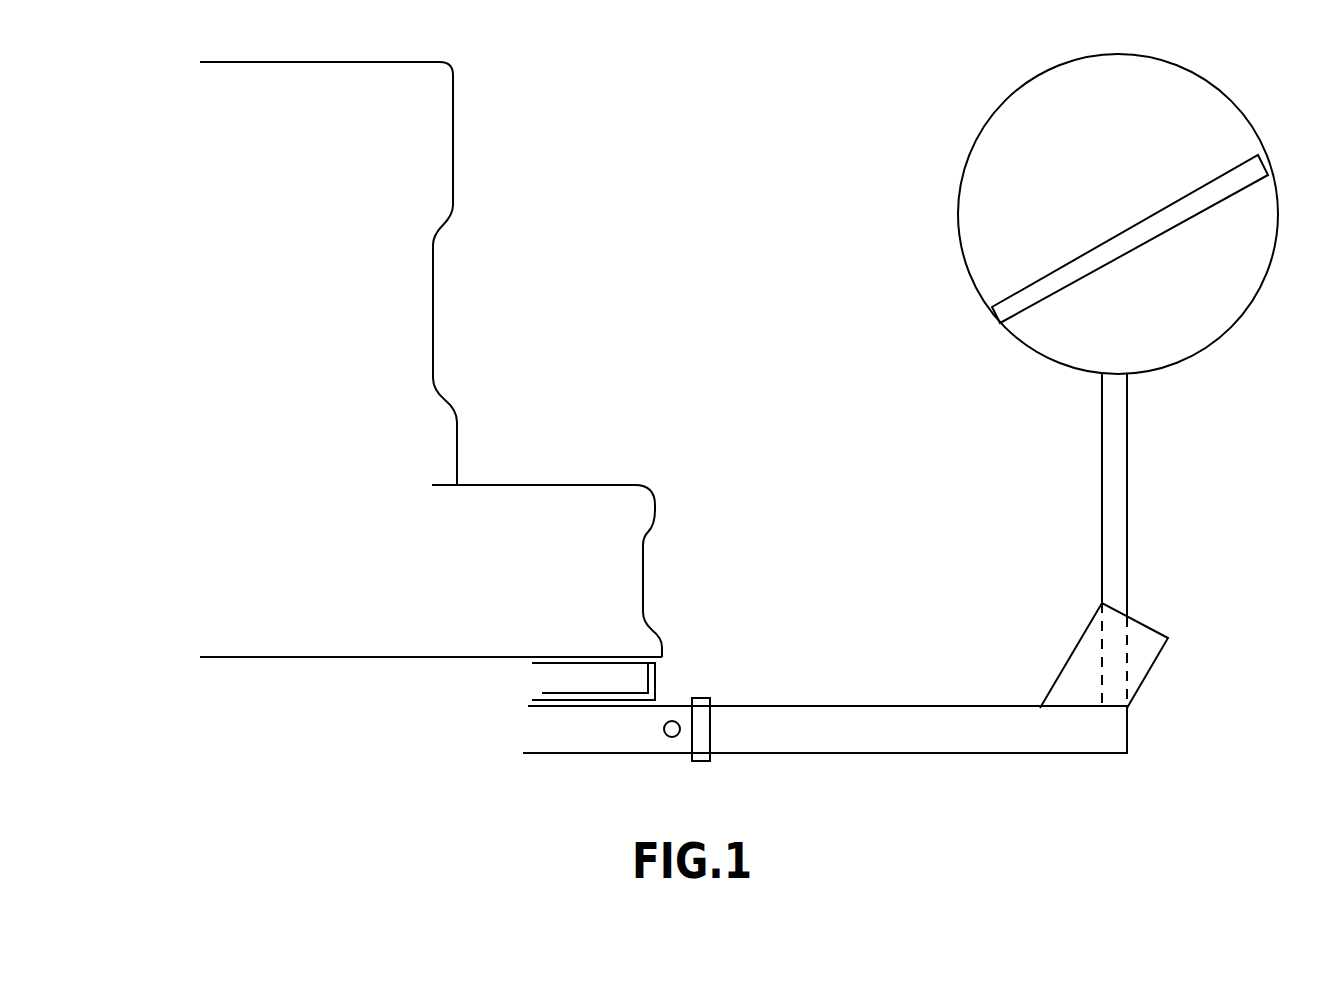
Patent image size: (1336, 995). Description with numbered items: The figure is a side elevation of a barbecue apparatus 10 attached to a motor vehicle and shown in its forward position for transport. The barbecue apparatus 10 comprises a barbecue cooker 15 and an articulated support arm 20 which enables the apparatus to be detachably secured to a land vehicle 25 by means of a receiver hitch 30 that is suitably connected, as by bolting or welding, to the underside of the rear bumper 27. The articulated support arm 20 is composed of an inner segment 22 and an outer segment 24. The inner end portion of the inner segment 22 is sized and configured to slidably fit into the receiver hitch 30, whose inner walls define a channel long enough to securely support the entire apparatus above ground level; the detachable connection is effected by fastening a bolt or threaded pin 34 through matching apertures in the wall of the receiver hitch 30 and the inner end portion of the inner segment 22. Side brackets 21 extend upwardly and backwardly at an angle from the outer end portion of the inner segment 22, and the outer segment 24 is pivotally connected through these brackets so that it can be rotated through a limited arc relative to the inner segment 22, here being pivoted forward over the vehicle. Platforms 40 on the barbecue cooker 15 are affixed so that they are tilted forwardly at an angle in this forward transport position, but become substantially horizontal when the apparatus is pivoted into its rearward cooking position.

The barbecue apparatus 10 is at (966, 479).
The barbecue cooker 15 is at (1192, 92).
The platforms 40 is at (1072, 262).
The outer segment 24 is at (1117, 498).
The side brackets 21 is at (1073, 668).
The articulated support arm 20 is at (1050, 760).
The inner segment 22 is at (882, 718).
The receiver hitch 30 is at (638, 738).
The threaded pin 34 is at (673, 720).
The land vehicle 25 is at (441, 129).
The rear bumper 27 is at (578, 502).